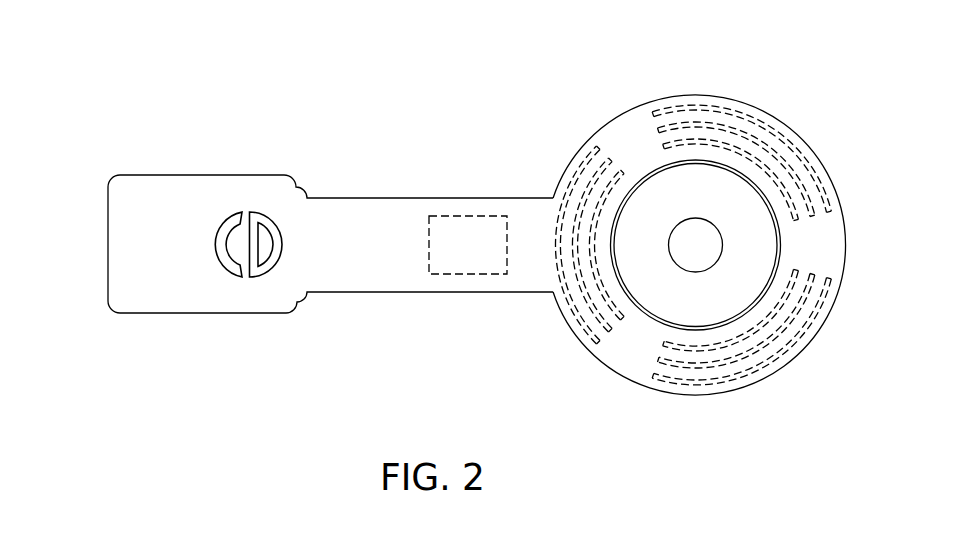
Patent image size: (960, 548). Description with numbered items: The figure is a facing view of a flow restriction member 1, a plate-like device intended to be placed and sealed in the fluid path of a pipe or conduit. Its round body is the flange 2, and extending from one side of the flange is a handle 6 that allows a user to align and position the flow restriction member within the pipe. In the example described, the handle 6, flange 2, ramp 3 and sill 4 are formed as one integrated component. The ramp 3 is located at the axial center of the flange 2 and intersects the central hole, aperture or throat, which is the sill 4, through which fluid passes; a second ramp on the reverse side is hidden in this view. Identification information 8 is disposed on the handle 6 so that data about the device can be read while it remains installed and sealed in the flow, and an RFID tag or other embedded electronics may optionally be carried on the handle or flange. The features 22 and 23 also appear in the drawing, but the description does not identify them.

The flow restriction member 1 is at (713, 78).
The flange 2 is at (635, 147).
The ramp 3 is at (733, 200).
The sill 4 is at (700, 270).
The handle 6 is at (277, 195).
The identification information 8 is at (158, 200).
The arcuate slots / grooves 22 is at (820, 187).
The marking area 23 is at (468, 273).